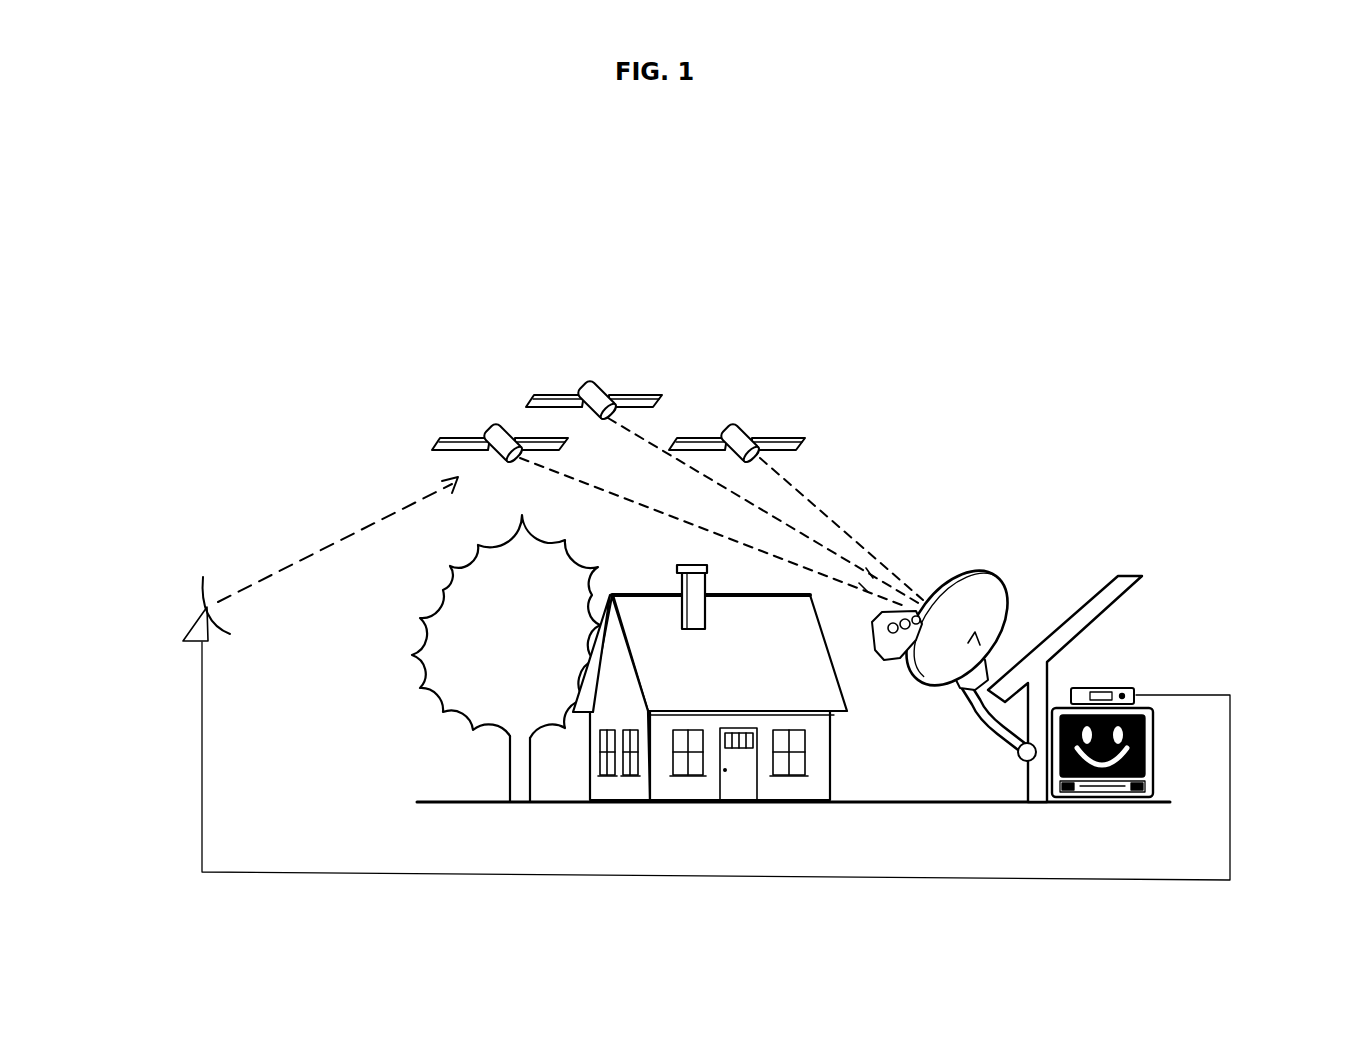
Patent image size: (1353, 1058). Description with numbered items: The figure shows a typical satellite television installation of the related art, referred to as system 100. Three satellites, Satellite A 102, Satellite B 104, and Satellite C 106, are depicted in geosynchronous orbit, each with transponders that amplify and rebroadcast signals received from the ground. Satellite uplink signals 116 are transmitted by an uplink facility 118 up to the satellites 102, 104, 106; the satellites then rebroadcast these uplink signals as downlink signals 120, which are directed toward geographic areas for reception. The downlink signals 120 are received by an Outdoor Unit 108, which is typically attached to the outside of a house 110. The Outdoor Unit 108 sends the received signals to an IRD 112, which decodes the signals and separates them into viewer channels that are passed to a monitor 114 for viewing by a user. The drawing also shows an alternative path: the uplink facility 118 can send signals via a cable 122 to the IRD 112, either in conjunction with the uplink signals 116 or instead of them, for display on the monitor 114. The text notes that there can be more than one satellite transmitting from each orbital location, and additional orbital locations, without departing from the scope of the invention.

The system 100 is at (790, 199).
The Satellite A 102 is at (470, 426).
The Satellite B 104 is at (748, 414).
The Satellite C 106 is at (655, 381).
The Outdoor Unit 108 is at (973, 560).
The house 110 is at (1084, 588).
The IRD 112 is at (1103, 686).
The monitor 114 is at (1153, 738).
The satellite uplink signals 116 is at (288, 552).
The uplink facility 118 is at (189, 613).
The downlink signals 120 is at (832, 520).
The cable 122 is at (1212, 695).